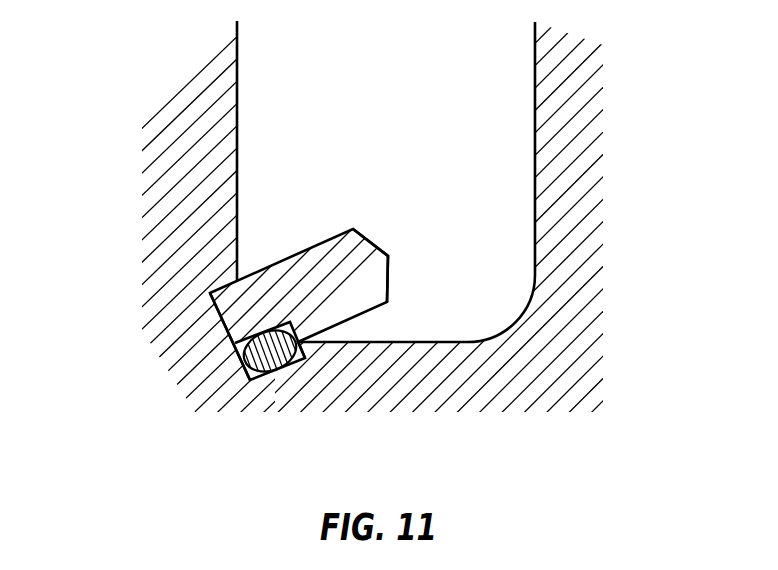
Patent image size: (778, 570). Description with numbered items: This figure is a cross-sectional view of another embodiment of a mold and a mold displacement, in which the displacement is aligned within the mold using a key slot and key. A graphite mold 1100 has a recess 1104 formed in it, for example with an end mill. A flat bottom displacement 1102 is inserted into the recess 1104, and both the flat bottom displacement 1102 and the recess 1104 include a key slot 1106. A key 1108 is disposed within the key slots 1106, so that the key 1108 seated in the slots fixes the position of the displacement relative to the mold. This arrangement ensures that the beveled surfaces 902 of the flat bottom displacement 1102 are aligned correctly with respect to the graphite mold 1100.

The graphite mold 1100 is at (563, 142).
The flat bottom displacement 1102 is at (303, 272).
The beveled surfaces 902 is at (390, 281).
The recess 1104 is at (220, 311).
The key slot 1106 is at (237, 347).
The key 1108 is at (272, 370).